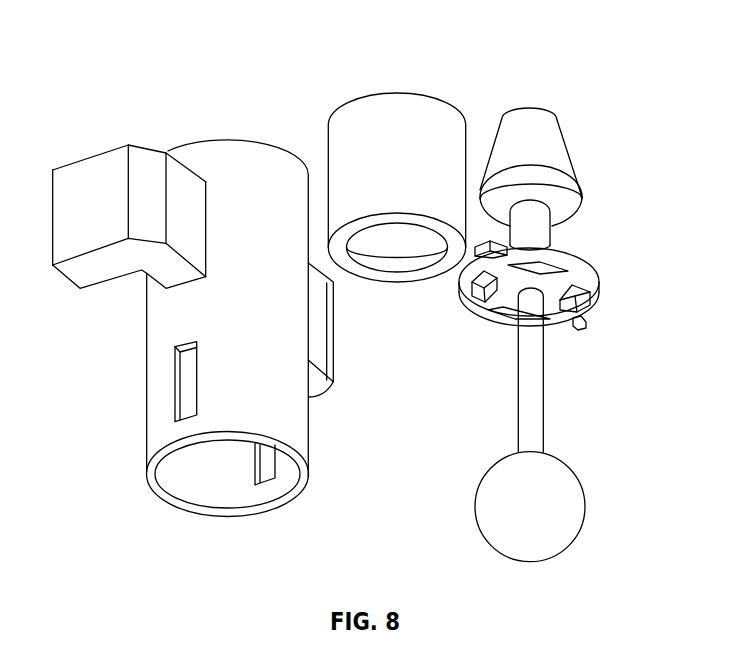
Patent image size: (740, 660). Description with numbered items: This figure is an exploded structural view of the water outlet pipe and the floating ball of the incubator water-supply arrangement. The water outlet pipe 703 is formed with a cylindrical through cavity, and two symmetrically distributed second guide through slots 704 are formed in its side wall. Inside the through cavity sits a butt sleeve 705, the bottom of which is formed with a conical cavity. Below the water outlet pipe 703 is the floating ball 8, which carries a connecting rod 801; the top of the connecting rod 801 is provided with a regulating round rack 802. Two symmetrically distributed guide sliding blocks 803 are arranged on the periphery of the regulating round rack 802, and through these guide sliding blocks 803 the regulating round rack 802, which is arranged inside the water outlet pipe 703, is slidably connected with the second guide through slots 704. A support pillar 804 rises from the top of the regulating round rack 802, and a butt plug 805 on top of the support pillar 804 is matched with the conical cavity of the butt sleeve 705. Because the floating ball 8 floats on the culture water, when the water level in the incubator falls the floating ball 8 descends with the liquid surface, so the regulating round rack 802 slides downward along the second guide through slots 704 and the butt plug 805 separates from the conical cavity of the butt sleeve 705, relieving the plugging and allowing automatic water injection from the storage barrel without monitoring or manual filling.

The floating ball 8 is at (553, 505).
The water outlet pipe 703 is at (257, 177).
The second guide through slot 704 is at (175, 377).
The butt sleeve 705 is at (368, 137).
The connecting rod 801 is at (525, 403).
The regulating round rack 802 is at (578, 283).
The guide sliding block 803 is at (586, 327).
The support pillar 804 is at (533, 230).
The butt plug 805 is at (545, 150).